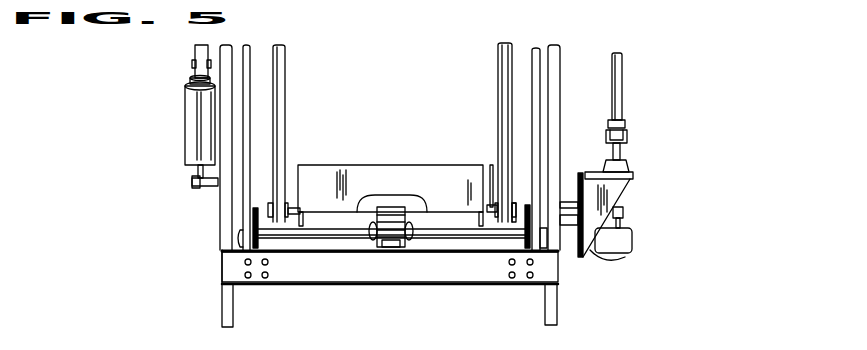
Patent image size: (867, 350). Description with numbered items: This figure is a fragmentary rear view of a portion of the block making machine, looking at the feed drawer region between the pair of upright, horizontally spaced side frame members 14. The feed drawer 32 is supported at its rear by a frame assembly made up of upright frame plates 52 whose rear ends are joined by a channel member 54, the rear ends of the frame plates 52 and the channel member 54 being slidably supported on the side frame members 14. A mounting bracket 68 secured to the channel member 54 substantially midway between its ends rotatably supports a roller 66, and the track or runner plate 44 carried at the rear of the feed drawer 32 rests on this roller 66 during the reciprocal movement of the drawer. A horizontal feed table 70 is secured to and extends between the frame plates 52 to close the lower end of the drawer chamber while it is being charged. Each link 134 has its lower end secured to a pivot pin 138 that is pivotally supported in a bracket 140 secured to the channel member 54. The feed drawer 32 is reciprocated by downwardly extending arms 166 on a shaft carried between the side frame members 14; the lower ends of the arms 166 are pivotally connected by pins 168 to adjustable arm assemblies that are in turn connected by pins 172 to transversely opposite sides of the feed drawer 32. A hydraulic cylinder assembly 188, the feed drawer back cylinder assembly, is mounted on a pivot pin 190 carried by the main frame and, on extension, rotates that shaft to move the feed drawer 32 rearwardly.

The side frame members 14 is at (228, 195).
The feed drawer 32 is at (389, 176).
The track or runner plate 44 is at (396, 208).
The frame plates 52 is at (255, 242).
The channel member 54 is at (377, 285).
The roller 66 is at (378, 230).
The mounting bracket 68 is at (412, 238).
The feed table 70 is at (305, 239).
The link 134 is at (247, 137).
The pivot pin 138 is at (238, 242).
The bracket 140 is at (265, 264).
The arms 166 is at (278, 110).
The pins 168 is at (512, 207).
The pins 172 is at (491, 180).
The hydraulic cylinder assembly 188 is at (193, 128).
The pivot pin 190 is at (192, 183).